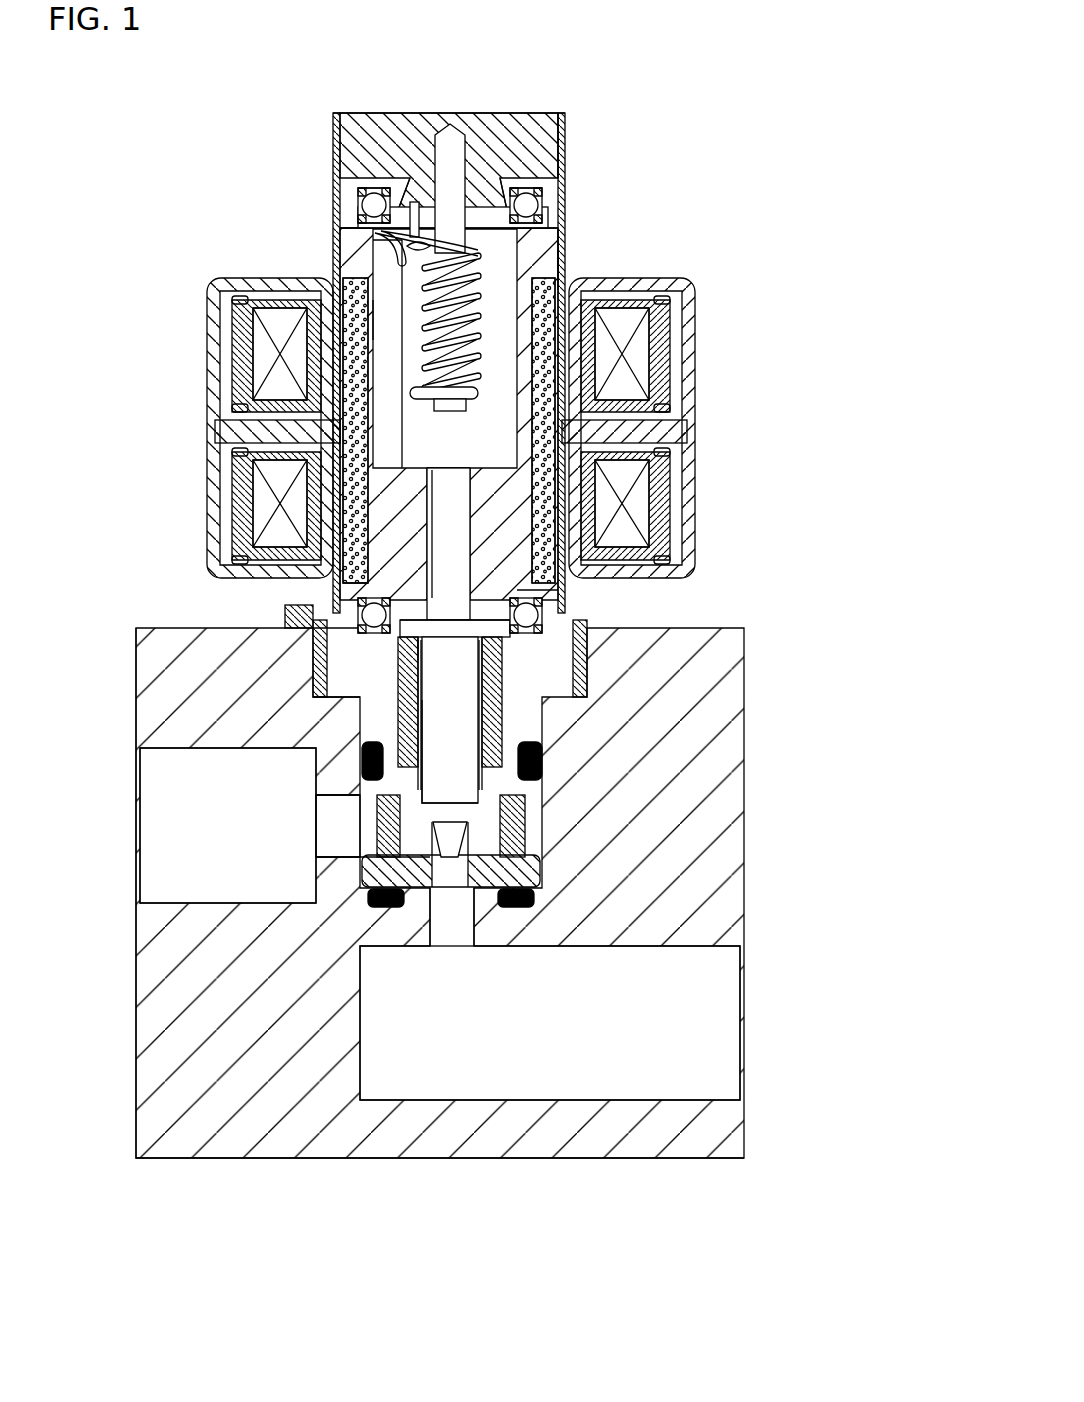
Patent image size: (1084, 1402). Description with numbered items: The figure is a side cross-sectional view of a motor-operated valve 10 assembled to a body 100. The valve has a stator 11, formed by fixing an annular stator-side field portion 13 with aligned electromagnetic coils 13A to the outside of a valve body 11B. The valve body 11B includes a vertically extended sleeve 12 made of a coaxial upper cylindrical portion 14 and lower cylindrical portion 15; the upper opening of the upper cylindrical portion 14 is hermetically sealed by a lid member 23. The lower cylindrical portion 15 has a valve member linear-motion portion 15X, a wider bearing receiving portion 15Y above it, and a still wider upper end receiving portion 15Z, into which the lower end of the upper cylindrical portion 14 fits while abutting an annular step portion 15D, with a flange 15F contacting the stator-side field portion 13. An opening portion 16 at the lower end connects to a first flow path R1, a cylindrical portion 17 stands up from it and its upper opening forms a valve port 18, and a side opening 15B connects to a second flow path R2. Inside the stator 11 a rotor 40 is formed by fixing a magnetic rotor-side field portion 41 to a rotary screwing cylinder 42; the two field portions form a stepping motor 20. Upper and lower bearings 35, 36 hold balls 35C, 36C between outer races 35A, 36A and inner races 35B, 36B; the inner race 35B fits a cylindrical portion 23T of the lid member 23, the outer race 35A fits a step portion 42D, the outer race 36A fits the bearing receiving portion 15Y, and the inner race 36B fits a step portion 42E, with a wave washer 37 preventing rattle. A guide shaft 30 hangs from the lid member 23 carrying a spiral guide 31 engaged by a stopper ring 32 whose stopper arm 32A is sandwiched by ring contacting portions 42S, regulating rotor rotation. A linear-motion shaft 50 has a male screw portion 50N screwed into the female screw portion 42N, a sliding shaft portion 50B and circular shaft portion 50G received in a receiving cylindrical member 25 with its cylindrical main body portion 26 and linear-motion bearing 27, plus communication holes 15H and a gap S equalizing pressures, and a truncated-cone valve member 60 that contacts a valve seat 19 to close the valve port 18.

The motor-operated valve 10 is at (690, 116).
The stator 11 is at (578, 113).
The valve body 11B is at (567, 136).
The sleeve 12 is at (560, 263).
The stator-side field portion 13 is at (697, 290).
The electromagnetic coils 13A is at (650, 358).
The upper cylindrical portion 14 is at (345, 214).
The lower cylindrical portion 15 is at (330, 660).
The side opening 15B is at (385, 848).
The annular step portion 15D is at (358, 525).
The flange 15F is at (286, 603).
The communication holes 15H is at (380, 697).
The valve member linear-motion portion 15X is at (300, 765).
The bearing receiving portion 15Y is at (310, 626).
The upper end receiving portion 15Z is at (358, 548).
The opening portion 16 is at (459, 890).
The cylindrical portion 17 is at (392, 906).
The valve port 18 is at (455, 872).
The valve seat 19 is at (370, 800).
The stepping motor 20 is at (690, 265).
The lid member 23 is at (366, 112).
The cylindrical portion 23T is at (494, 178).
The receiving cylindrical member 25 is at (470, 702).
The cylindrical main body portion 26 is at (480, 690).
The linear-motion bearing 27 is at (418, 752).
The guide shaft 30 is at (452, 135).
The spiral guide 31 is at (410, 396).
The stopper ring 32 is at (400, 240).
The stopper arm 32A is at (408, 250).
The bearing 35 is at (240, 96).
The outer race 35A is at (385, 189).
The inner race 35B is at (375, 186).
The balls 35C is at (372, 198).
The bearing 36 is at (812, 658).
The outer race 36A is at (542, 650).
The inner race 36B is at (500, 682).
The balls 36C is at (512, 662).
The wave washer 37 is at (548, 180).
The rotor 40 is at (549, 200).
The rotor-side field portion 41 is at (562, 250).
The rotary screwing cylinder 42 is at (540, 236).
The step portion 42D is at (348, 212).
The step portion 42E is at (530, 640).
The female screw portion 42N is at (470, 492).
The ring contacting portions 42S is at (382, 315).
The linear-motion shaft 50 is at (480, 592).
The sliding shaft portion 50B is at (440, 700).
The circular shaft portion 50G is at (455, 782).
The male screw portion 50N is at (470, 532).
The valve member 60 is at (455, 823).
The body 100 is at (134, 1010).
The first flow path R1 is at (451, 915).
The second flow path R2 is at (330, 830).
The gap S is at (385, 722).